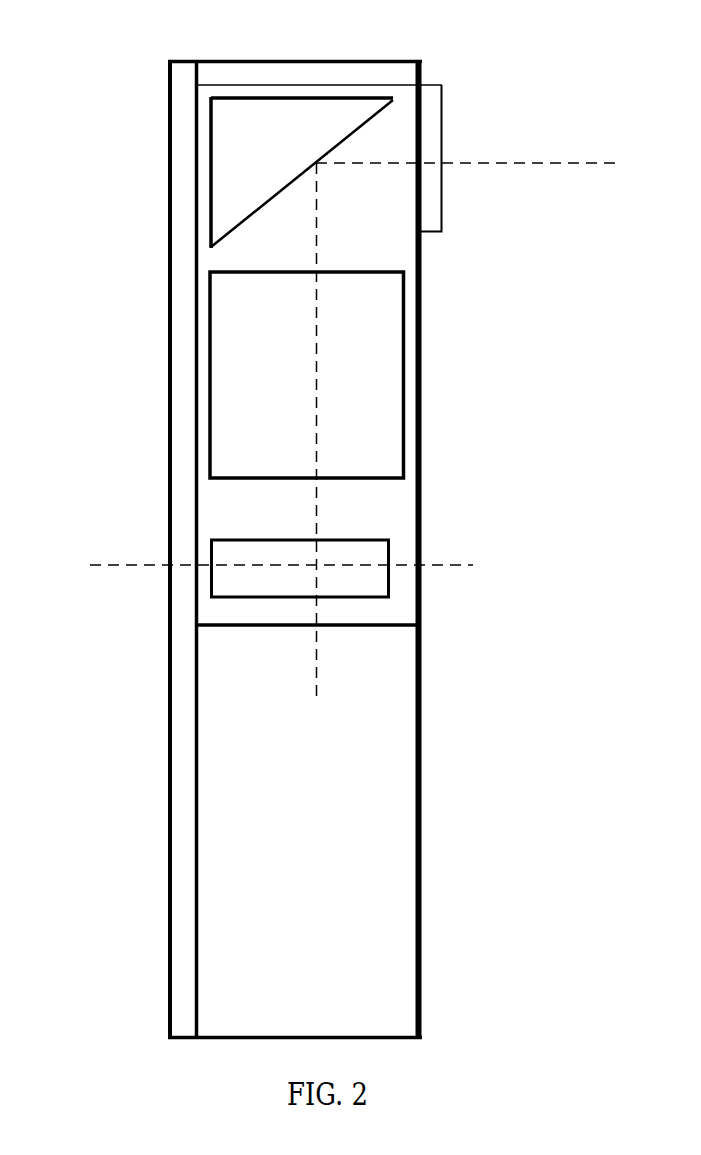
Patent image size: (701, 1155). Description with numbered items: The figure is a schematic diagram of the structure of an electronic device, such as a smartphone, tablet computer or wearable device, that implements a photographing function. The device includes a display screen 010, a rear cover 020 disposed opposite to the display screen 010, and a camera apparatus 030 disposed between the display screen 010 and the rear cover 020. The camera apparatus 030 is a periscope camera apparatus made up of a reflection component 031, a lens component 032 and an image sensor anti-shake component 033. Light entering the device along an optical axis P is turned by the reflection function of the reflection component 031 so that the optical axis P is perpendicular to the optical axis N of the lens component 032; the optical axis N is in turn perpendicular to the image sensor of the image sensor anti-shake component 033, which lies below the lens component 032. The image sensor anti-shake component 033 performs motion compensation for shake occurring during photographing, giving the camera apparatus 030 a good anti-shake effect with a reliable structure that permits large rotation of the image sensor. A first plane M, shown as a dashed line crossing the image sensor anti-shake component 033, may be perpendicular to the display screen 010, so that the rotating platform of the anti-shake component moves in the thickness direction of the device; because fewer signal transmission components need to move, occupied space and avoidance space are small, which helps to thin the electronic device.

The display screen 010 is at (181, 298).
The rear cover 020 is at (418, 703).
The camera apparatus 030 is at (397, 128).
The reflection component 031 is at (282, 125).
The lens component 032 is at (378, 373).
The image sensor anti-shake component 033 is at (378, 553).
The optical axis of incident light ray P is at (587, 163).
The first plane M is at (112, 565).
The optical axis of lens component N is at (317, 643).